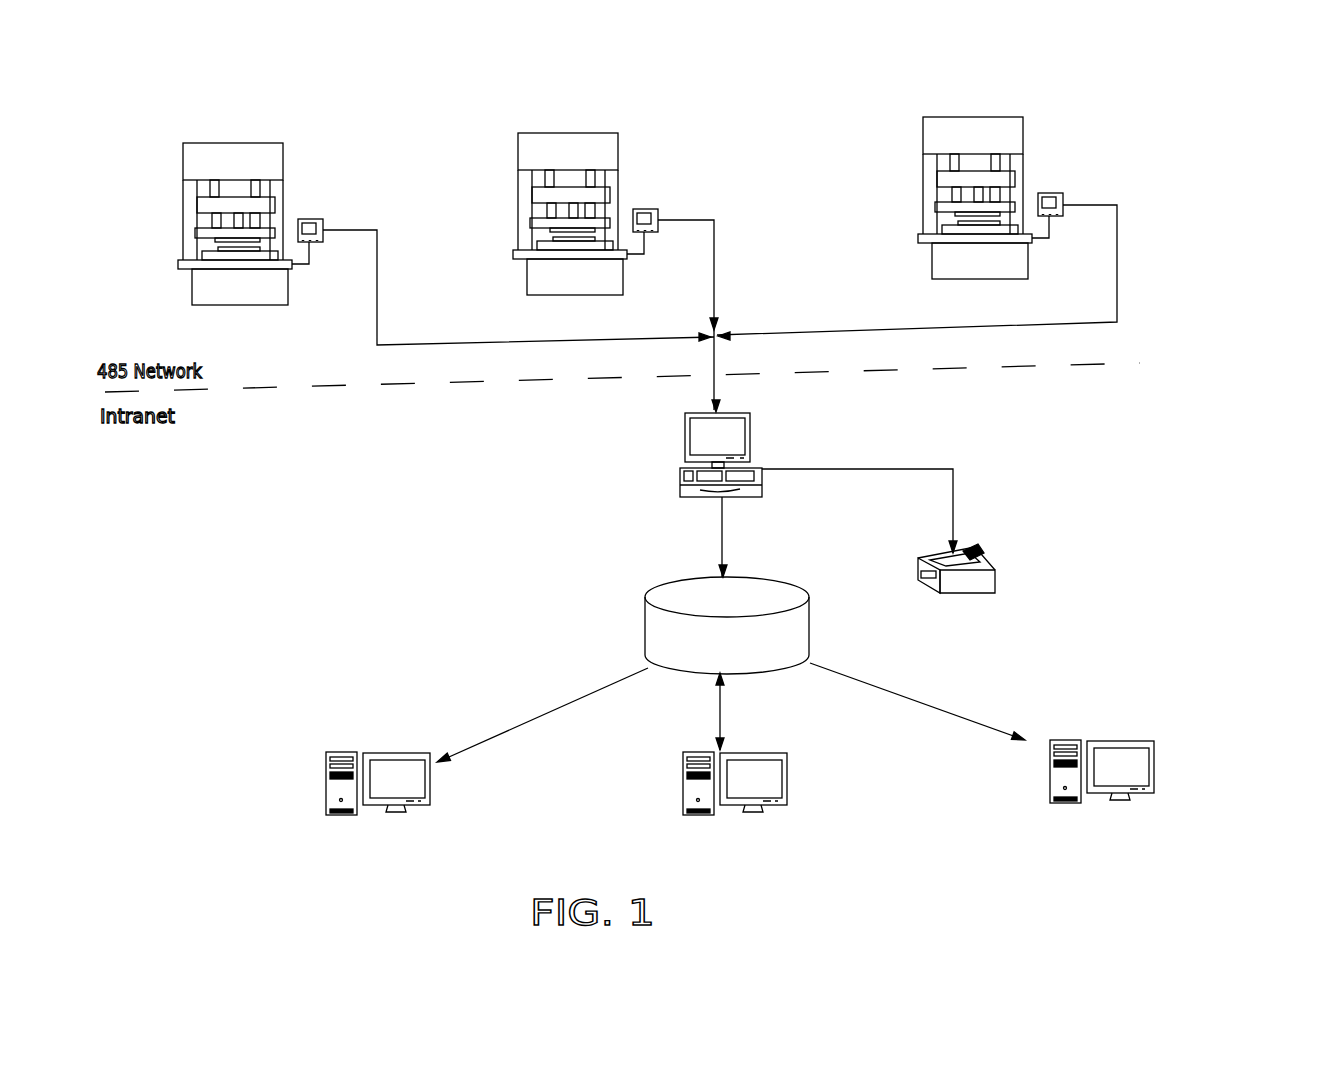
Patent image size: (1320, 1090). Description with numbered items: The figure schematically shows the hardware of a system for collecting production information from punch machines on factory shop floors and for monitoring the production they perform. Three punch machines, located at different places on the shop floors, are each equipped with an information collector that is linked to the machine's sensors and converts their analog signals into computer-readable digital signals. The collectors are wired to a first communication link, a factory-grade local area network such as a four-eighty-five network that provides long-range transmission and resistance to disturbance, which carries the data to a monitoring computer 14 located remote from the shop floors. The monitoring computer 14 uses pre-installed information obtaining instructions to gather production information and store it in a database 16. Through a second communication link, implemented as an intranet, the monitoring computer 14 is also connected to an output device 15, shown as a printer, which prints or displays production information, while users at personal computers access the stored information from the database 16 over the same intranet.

The monitoring computer 14 is at (733, 442).
The output device 15 is at (980, 578).
The database 16 is at (667, 617).